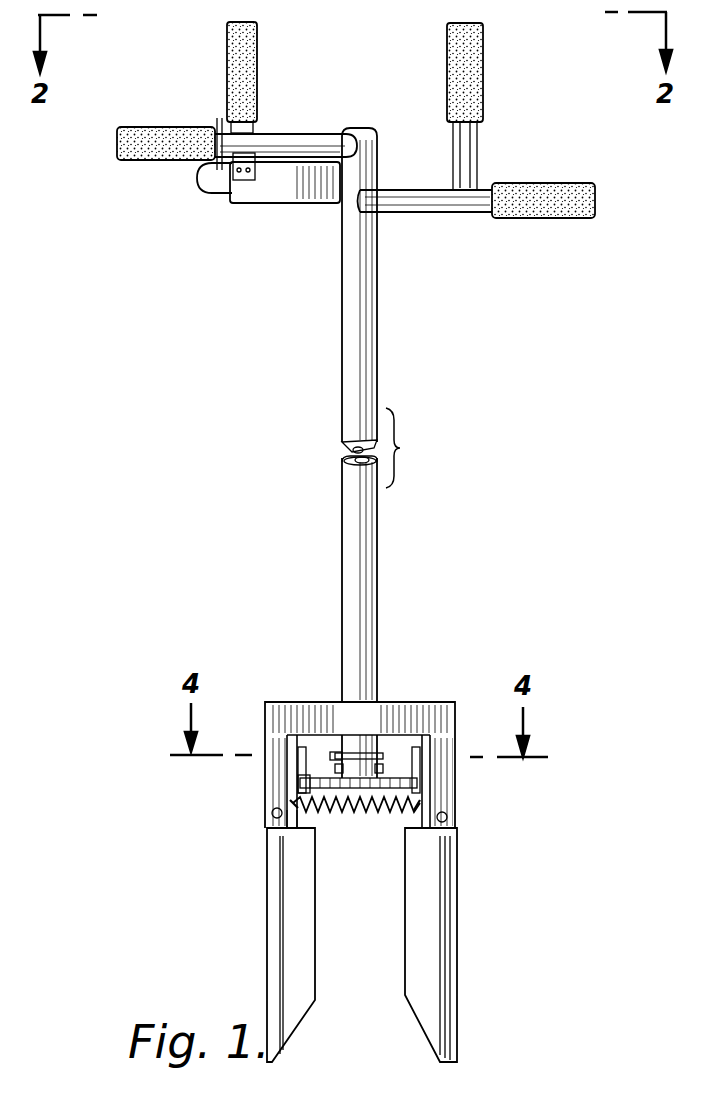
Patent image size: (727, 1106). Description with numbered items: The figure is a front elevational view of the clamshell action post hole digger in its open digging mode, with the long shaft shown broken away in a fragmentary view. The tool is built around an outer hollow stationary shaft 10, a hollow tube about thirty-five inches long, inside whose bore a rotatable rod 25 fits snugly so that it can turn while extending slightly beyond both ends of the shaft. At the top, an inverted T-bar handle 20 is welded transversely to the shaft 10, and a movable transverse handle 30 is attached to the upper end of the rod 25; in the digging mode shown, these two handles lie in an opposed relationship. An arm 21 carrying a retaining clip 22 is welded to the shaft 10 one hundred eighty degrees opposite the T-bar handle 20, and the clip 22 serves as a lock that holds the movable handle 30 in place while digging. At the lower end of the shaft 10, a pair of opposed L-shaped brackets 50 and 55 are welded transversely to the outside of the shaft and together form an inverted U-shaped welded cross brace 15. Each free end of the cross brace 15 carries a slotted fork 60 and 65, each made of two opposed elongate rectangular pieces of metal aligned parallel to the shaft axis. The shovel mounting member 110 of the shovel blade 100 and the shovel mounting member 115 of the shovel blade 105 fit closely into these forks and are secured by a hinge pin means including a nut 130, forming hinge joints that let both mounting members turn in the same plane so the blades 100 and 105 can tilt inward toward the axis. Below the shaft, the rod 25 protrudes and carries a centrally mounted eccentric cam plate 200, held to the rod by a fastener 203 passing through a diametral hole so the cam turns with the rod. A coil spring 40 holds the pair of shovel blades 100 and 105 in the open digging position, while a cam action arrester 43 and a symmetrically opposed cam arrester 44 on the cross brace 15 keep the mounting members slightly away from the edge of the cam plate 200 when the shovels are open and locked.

The outer hollow stationary shaft 10 is at (342, 372).
The welded cross brace 15 is at (428, 698).
The inverted T-bar handle 20 is at (428, 230).
The arm 21 is at (286, 203).
The retaining clip 22 is at (213, 190).
The rotatable rod 25 is at (342, 455).
The movable transverse handle 30 is at (117, 140).
The coil spring 40 is at (364, 790).
The cam action arrester 43 is at (292, 792).
The cam arrester 44 is at (448, 794).
The L-shaped bracket 50 is at (282, 712).
The L-shaped bracket 55 is at (445, 720).
The slotted fork 60 is at (276, 748).
The slotted fork 65 is at (446, 766).
The shovel blade 100 is at (267, 925).
The shovel blade 105 is at (457, 952).
The shovel mounting member 110 is at (297, 780).
The shovel mounting member 115 is at (432, 790).
The nut 130 is at (268, 820).
The eccentric cam plate 200 is at (388, 816).
The fastener 203 is at (332, 757).